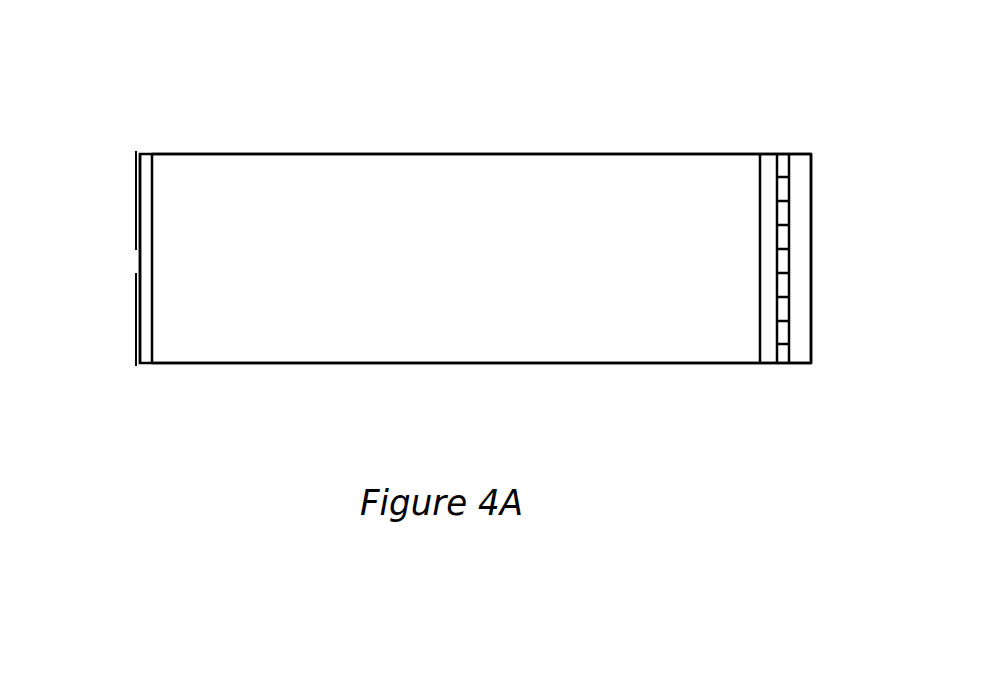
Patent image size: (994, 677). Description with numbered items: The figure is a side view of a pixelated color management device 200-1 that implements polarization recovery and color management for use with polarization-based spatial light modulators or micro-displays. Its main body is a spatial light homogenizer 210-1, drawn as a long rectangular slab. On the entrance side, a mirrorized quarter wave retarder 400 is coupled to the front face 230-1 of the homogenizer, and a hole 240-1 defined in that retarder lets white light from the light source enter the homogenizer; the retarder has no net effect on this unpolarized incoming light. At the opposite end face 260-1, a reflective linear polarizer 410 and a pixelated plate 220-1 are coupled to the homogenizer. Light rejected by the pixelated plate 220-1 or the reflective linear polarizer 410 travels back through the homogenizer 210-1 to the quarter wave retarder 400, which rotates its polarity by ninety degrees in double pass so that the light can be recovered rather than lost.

The pixelated color management device 200-1 is at (276, 72).
The spatial light homogenizer 210-1 is at (481, 144).
The pixelated plate 220-1 is at (781, 376).
The front face 230-1 is at (162, 320).
The hole 240-1 is at (128, 258).
The end face 260-1 is at (748, 285).
The ¼ wave retarder 400 is at (134, 313).
The reflective linear polarizer 410 is at (760, 144).